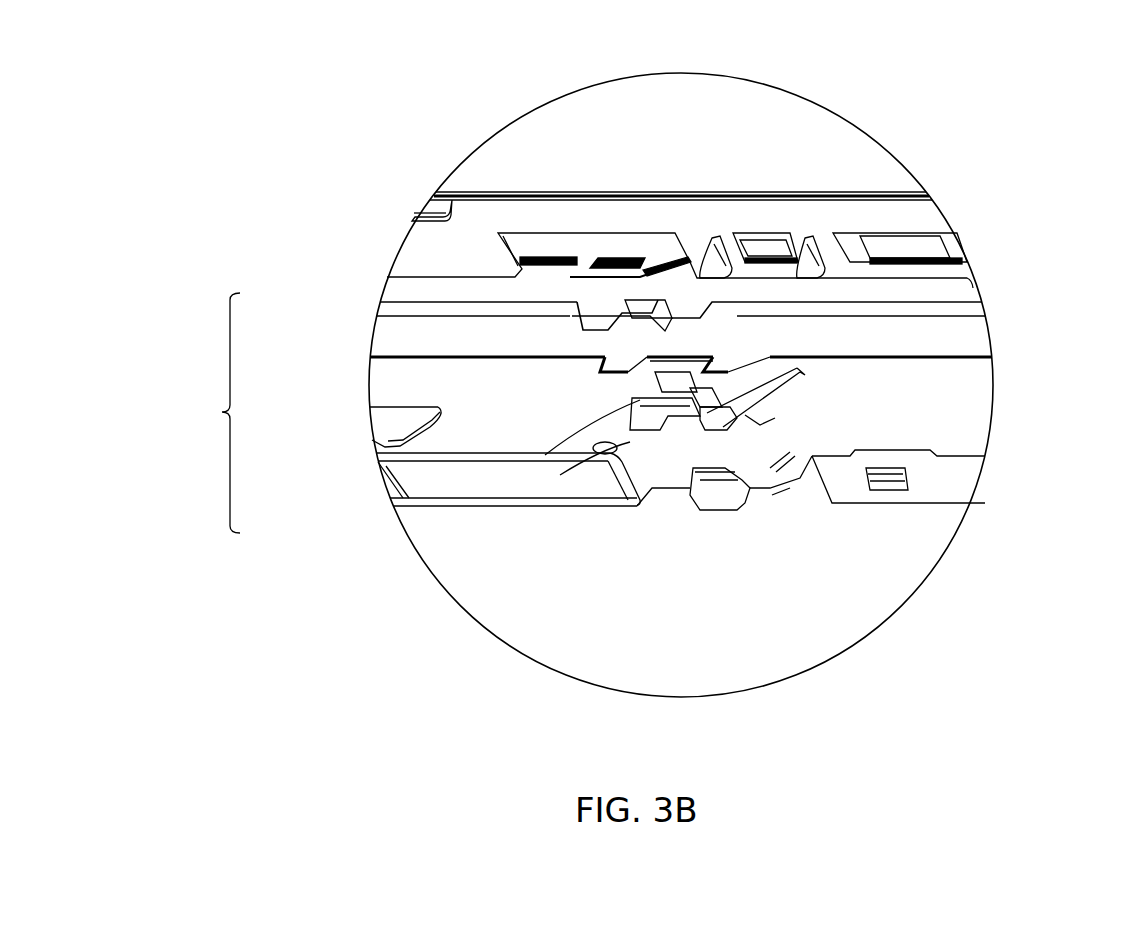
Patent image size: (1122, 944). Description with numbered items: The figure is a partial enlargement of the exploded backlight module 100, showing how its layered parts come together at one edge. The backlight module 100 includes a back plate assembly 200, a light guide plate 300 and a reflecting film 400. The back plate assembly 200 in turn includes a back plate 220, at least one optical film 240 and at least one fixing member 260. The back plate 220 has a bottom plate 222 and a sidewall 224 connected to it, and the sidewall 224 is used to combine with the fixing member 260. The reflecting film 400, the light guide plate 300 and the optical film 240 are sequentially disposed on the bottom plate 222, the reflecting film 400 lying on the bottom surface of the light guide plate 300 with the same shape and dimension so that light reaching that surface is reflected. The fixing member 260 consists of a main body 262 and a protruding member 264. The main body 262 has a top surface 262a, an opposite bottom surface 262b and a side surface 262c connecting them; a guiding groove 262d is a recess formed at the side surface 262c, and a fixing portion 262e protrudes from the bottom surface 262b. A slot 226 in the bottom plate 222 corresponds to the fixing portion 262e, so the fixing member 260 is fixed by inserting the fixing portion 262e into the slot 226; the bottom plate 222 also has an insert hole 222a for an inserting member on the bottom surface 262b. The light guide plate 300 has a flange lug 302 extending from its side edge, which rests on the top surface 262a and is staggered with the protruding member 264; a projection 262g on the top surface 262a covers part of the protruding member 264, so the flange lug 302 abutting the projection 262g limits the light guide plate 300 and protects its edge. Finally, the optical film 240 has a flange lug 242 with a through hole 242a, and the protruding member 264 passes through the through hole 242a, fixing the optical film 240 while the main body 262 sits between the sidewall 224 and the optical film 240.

The backlight module 100 is at (300, 104).
The back plate assembly 200 is at (576, 528).
The back plate 220 is at (425, 511).
The bottom plate 222 is at (500, 427).
The insert hole 222a is at (815, 465).
The sidewall 224 is at (745, 510).
The slot 226 is at (790, 505).
The optical film 240 is at (611, 175).
The flange lug 242 is at (655, 256).
The through hole 242a is at (605, 262).
The fixing member 260 is at (445, 517).
The main body 262 is at (814, 451).
The top surface 262a is at (762, 380).
The bottom surface 262b is at (804, 384).
The side surface 262c is at (712, 495).
The guiding groove 262d is at (660, 432).
The fixing portion 262e is at (775, 495).
The projection 262g is at (655, 440).
The protruding member 264 is at (640, 400).
The light guide plate 300 is at (950, 292).
The flange lug 302 is at (708, 318).
The reflecting film 400 is at (830, 356).